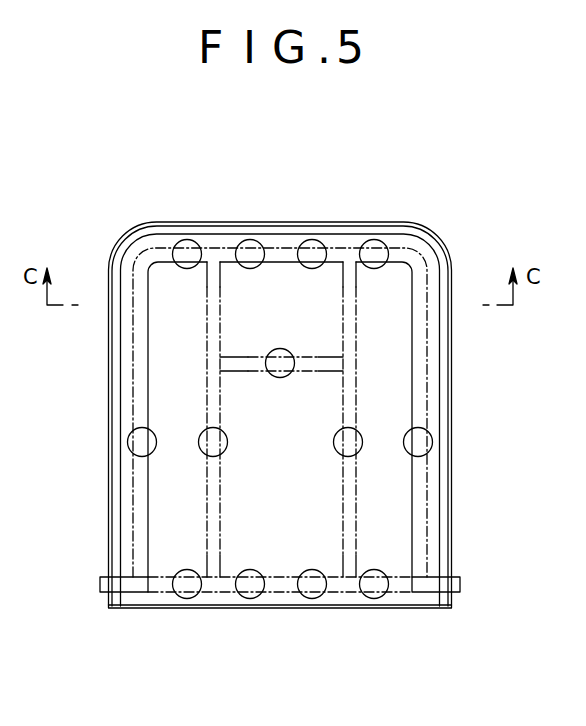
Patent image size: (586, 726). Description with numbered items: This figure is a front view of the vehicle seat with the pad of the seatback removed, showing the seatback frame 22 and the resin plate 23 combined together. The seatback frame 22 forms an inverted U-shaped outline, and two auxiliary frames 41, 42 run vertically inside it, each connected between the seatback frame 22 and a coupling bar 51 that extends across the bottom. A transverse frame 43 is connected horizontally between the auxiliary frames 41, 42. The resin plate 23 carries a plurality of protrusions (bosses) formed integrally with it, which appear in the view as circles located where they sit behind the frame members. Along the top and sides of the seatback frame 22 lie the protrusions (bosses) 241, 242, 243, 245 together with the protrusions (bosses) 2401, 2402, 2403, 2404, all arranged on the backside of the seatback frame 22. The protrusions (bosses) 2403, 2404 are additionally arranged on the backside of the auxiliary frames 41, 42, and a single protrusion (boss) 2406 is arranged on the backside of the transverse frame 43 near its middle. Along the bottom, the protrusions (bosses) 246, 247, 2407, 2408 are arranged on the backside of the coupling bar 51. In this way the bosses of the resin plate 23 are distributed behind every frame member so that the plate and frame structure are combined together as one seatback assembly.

The seatback frame 22 is at (131, 497).
The resin plate 23 is at (453, 496).
The auxiliary frame 41 is at (222, 479).
The auxiliary frame 42 is at (341, 521).
The transverse frame 43 is at (314, 372).
The coupling bar 51 is at (143, 594).
The protrusion (boss) 241 is at (180, 240).
The protrusion (boss) 242 is at (373, 240).
The protrusion (boss) 243 is at (129, 435).
The protrusion (boss) 245 is at (433, 432).
The protrusion (boss) 246 is at (188, 599).
The protrusion (boss) 247 is at (373, 599).
The protrusion (boss) 2401 is at (251, 240).
The protrusion (boss) 2402 is at (312, 240).
The protrusion (boss) 2403 is at (203, 430).
The protrusion (boss) 2404 is at (361, 430).
The protrusion (boss) 2406 is at (280, 348).
The protrusion (boss) 2407 is at (252, 599).
The protrusion (boss) 2408 is at (308, 599).